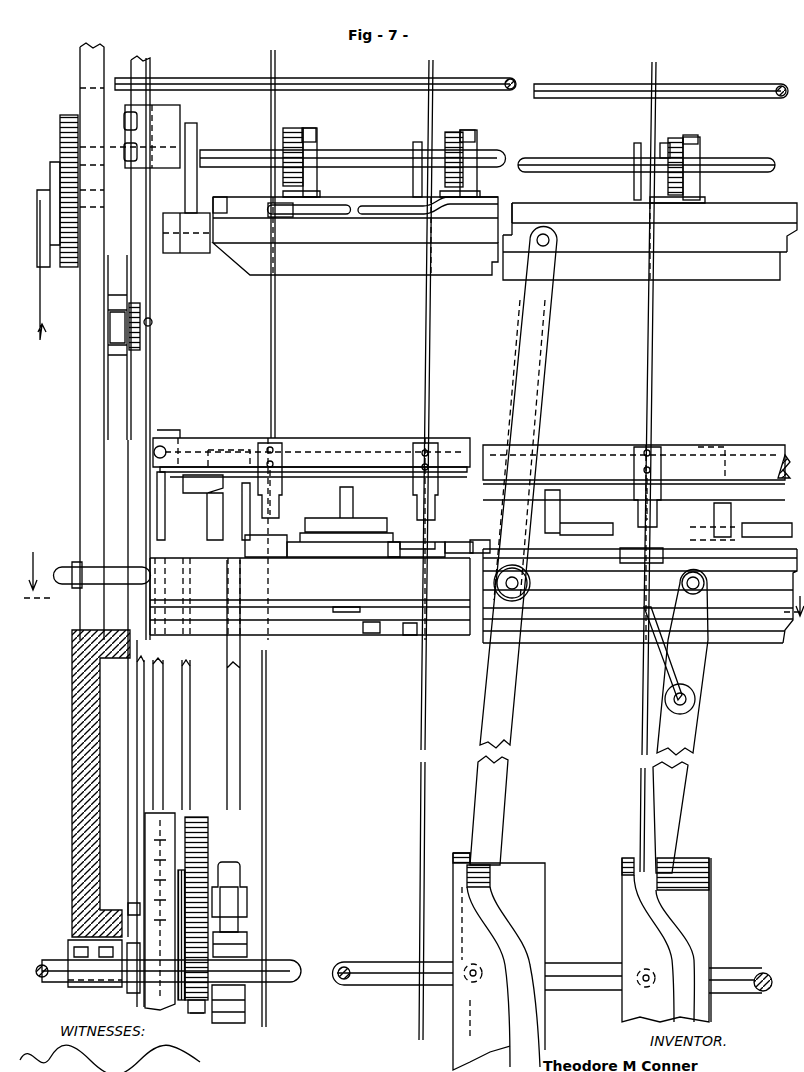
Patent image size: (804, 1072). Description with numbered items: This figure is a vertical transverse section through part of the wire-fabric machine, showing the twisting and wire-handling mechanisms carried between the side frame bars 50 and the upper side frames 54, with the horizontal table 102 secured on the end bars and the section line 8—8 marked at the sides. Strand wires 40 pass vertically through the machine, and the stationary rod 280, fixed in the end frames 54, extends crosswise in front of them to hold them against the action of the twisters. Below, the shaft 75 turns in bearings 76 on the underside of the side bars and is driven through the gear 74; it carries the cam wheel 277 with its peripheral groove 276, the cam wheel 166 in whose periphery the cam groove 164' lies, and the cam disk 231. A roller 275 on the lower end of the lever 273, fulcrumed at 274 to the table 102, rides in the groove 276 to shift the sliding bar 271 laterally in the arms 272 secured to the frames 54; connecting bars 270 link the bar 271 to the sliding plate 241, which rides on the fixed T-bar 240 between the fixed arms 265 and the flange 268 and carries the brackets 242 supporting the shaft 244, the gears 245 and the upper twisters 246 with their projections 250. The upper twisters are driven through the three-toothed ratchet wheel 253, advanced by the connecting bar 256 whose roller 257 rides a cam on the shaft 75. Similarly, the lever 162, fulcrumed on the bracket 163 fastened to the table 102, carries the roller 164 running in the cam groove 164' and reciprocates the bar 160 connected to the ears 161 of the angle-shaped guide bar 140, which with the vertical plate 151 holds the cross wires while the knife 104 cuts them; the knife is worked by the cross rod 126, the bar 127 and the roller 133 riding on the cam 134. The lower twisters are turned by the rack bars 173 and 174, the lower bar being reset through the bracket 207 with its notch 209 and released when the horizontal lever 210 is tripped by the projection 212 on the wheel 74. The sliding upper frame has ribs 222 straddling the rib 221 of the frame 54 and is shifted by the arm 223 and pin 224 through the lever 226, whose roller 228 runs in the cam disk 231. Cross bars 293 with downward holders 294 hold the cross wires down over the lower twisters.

The section line 8 is at (414, 594).
The strand wire 40 is at (275, 72).
The side frame bar 50 is at (72, 858).
The upper side frame 54 is at (80, 90).
The gear 74 is at (198, 1013).
The shaft 75 is at (50, 960).
The bearing 76 is at (76, 987).
The table 102 is at (638, 599).
The knife 104 is at (748, 524).
The cross rod 126 is at (364, 467).
The bar 127 is at (228, 690).
The roller 133 is at (247, 936).
The cam 134 is at (245, 948).
The guide bar 140 is at (342, 557).
The vertical plate 151 is at (582, 518).
The bar 160 is at (290, 565).
The ears 161 is at (258, 542).
The lever 162 is at (692, 676).
The bracket 163 is at (652, 665).
The roller 164 is at (617, 996).
The cam groove 164' is at (691, 948).
The block 166 is at (692, 872).
The lower rack bar 173 is at (62, 620).
The upper rack bar 174 is at (62, 590).
The bracket 207 is at (408, 635).
The notch 209 is at (370, 633).
The horizontal lever 210 is at (198, 816).
The projection 212 is at (240, 870).
The rib 221 is at (108, 326).
The ribs 222 is at (108, 302).
The arm 223 is at (148, 306).
The pin 224 is at (152, 321).
The lever 226 is at (150, 378).
The roller 228 is at (134, 903).
The cam disk 231 is at (150, 1000).
The T-bar 240 is at (370, 275).
The sliding plate 241 is at (566, 203).
The bracket 242 is at (317, 138).
The shaft 244 is at (374, 158).
The gear 245 is at (468, 130).
The upper twister 246 is at (310, 128).
The projections 250 is at (290, 128).
The ratchet wheel 253 is at (54, 176).
The connecting bar 256 is at (35, 279).
The roller 257 is at (60, 120).
The fixed arm 265 is at (235, 135).
The flange 268 is at (220, 197).
The connecting bar 270 is at (376, 206).
The sliding bar 271 is at (336, 230).
The arm 272 is at (163, 133).
The lever 273 is at (548, 336).
The fulcrum 274 is at (518, 586).
The roller 275 is at (476, 982).
The cam groove 276 is at (516, 940).
The cam wheel 277 is at (528, 858).
The stationary rod 280 is at (186, 78).
The cross bar 293 is at (215, 438).
The holder 294 is at (282, 504).